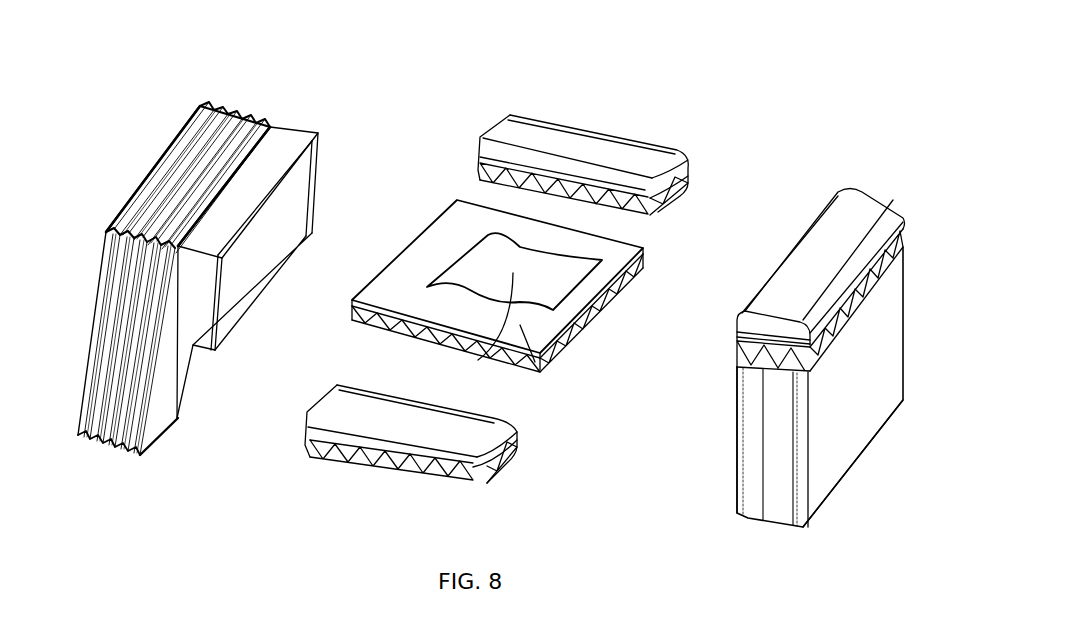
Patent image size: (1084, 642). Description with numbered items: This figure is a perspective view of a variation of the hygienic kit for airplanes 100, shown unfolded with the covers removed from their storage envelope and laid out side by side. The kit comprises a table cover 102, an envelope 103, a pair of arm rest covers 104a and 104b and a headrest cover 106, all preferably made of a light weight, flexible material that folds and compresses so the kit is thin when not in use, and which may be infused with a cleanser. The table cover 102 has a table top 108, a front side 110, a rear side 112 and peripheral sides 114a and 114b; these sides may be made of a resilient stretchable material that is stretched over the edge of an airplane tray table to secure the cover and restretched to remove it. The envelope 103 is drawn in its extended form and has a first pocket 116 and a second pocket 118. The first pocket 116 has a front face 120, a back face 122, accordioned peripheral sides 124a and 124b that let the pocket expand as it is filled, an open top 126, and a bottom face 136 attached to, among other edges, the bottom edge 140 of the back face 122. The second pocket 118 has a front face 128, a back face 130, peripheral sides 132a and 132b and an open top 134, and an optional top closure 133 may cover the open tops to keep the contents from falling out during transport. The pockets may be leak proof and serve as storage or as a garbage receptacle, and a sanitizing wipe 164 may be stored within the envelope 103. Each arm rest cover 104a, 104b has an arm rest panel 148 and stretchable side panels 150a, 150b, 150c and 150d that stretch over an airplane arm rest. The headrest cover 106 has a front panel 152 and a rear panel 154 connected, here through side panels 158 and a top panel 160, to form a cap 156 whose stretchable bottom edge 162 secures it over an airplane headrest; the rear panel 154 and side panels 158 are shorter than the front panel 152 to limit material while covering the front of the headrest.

The hygienic kit for airplanes 100 is at (786, 66).
The table cover 102 is at (540, 327).
The envelope 103 is at (172, 137).
The arm rest cover 104a is at (333, 453).
The arm rest cover 104b is at (632, 150).
The headrest cover 106 is at (737, 457).
The table top 108 is at (535, 362).
The front side 110 is at (612, 307).
The rear side 112 is at (380, 268).
The peripheral side 114a is at (395, 335).
The peripheral side 114b is at (603, 232).
The first pocket 116 is at (100, 437).
The second pocket 118 is at (207, 340).
The front face 120 is at (147, 190).
The back face 122 is at (163, 417).
The peripheral side 124a is at (103, 317).
The peripheral side 124b is at (232, 118).
The open top 126 is at (172, 177).
The front face 128 is at (253, 178).
The back face 130 is at (193, 345).
The peripheral side 132a is at (183, 312).
The peripheral side 132b is at (285, 167).
The top closure 133 is at (280, 228).
The open top 134 is at (253, 190).
The bottom face 136 is at (90, 440).
The bottom edge 140 is at (366, 0).
The arm rest panel 148 is at (587, 145).
The side panel 150a is at (477, 153).
The side panel 150b is at (497, 183).
The side panel 150c is at (685, 192).
The side panel 150d is at (560, 122).
The front panel 152 is at (737, 410).
The rear panel 154 is at (900, 247).
The cap 156 is at (828, 208).
The side panel 158 is at (760, 437).
The top panel 160 is at (853, 218).
The bottom edge 162 is at (847, 320).
The sanitizing wipe 164 is at (478, 360).